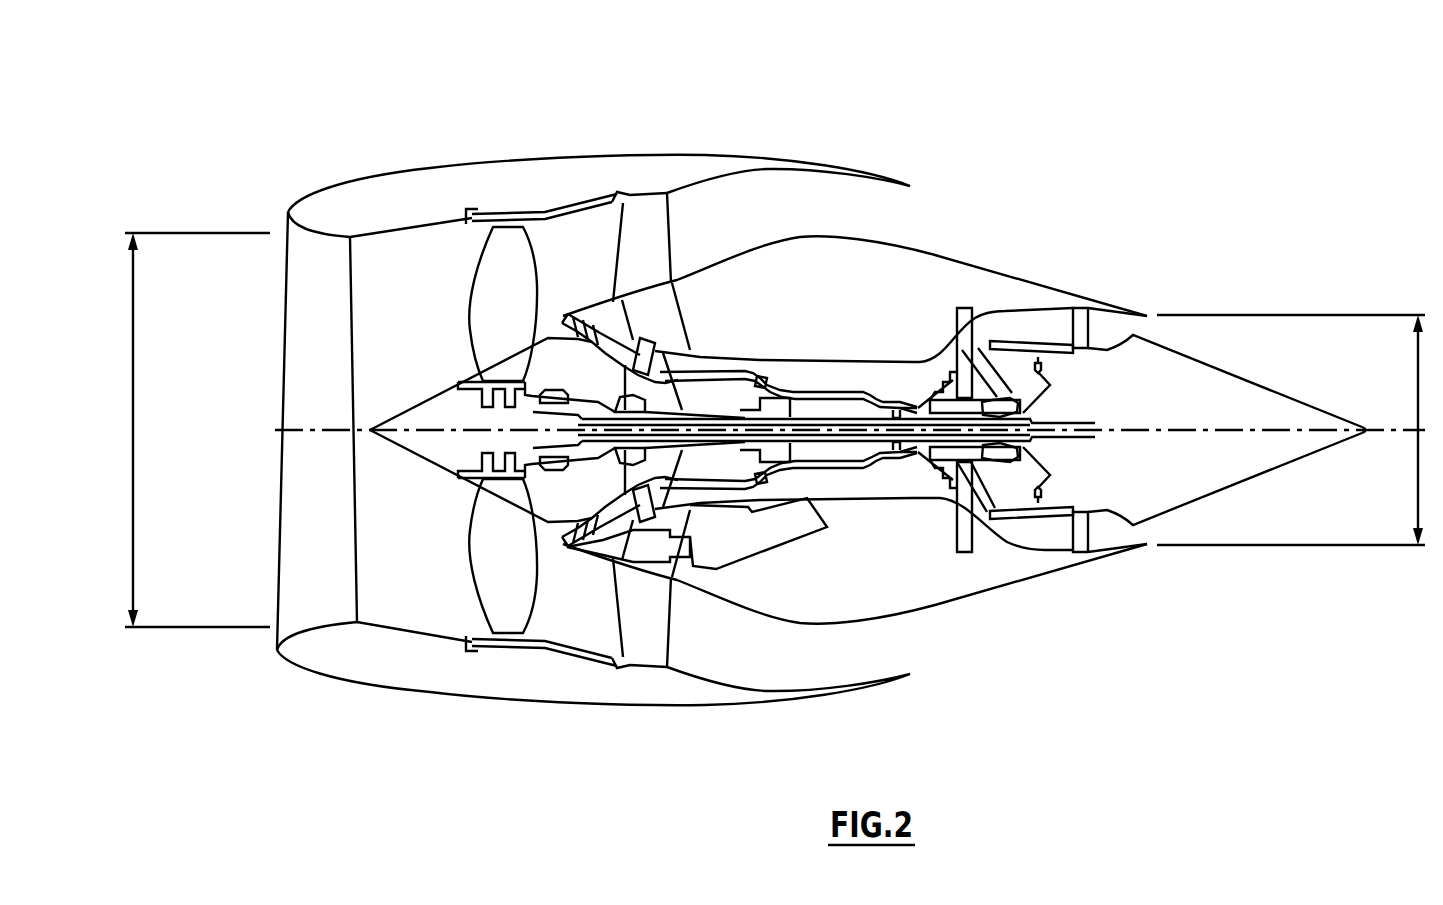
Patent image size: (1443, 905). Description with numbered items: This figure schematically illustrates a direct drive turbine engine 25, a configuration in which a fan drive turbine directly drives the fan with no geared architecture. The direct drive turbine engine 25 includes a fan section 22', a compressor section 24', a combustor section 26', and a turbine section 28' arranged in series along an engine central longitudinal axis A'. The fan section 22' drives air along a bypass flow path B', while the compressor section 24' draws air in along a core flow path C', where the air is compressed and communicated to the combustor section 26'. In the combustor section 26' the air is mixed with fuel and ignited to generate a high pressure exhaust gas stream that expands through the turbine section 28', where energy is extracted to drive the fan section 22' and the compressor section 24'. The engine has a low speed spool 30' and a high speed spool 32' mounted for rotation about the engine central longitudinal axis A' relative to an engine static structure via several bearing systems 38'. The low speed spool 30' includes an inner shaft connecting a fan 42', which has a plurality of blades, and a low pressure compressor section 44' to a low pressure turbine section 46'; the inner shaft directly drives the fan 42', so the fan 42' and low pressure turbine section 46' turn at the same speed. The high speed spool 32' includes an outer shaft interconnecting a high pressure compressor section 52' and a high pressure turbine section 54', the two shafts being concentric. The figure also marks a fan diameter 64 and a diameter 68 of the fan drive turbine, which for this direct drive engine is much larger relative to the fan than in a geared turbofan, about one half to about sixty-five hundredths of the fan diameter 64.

The direct drive turbine engine 25 is at (741, 364).
The fan section 22' is at (442, 344).
The compressor section 24' is at (739, 375).
The combustor section 26' is at (976, 377).
The turbine section 28' is at (1031, 404).
The low speed spool 30' is at (836, 512).
The high speed spool 32' is at (706, 538).
The bearing systems 38' is at (806, 398).
The fan 42' is at (466, 430).
The low pressure compressor section 44' is at (683, 405).
The low pressure turbine section 46' is at (1060, 366).
The high pressure compressor section 52' is at (788, 400).
The high pressure turbine section 54' is at (937, 456).
The fan diameter 64 is at (132, 443).
The diameter of the fan drive turbine 68 is at (1418, 470).
The engine central longitudinal axis A' is at (838, 392).
The bypass flow path B' is at (567, 247).
The core flow path C' is at (523, 307).